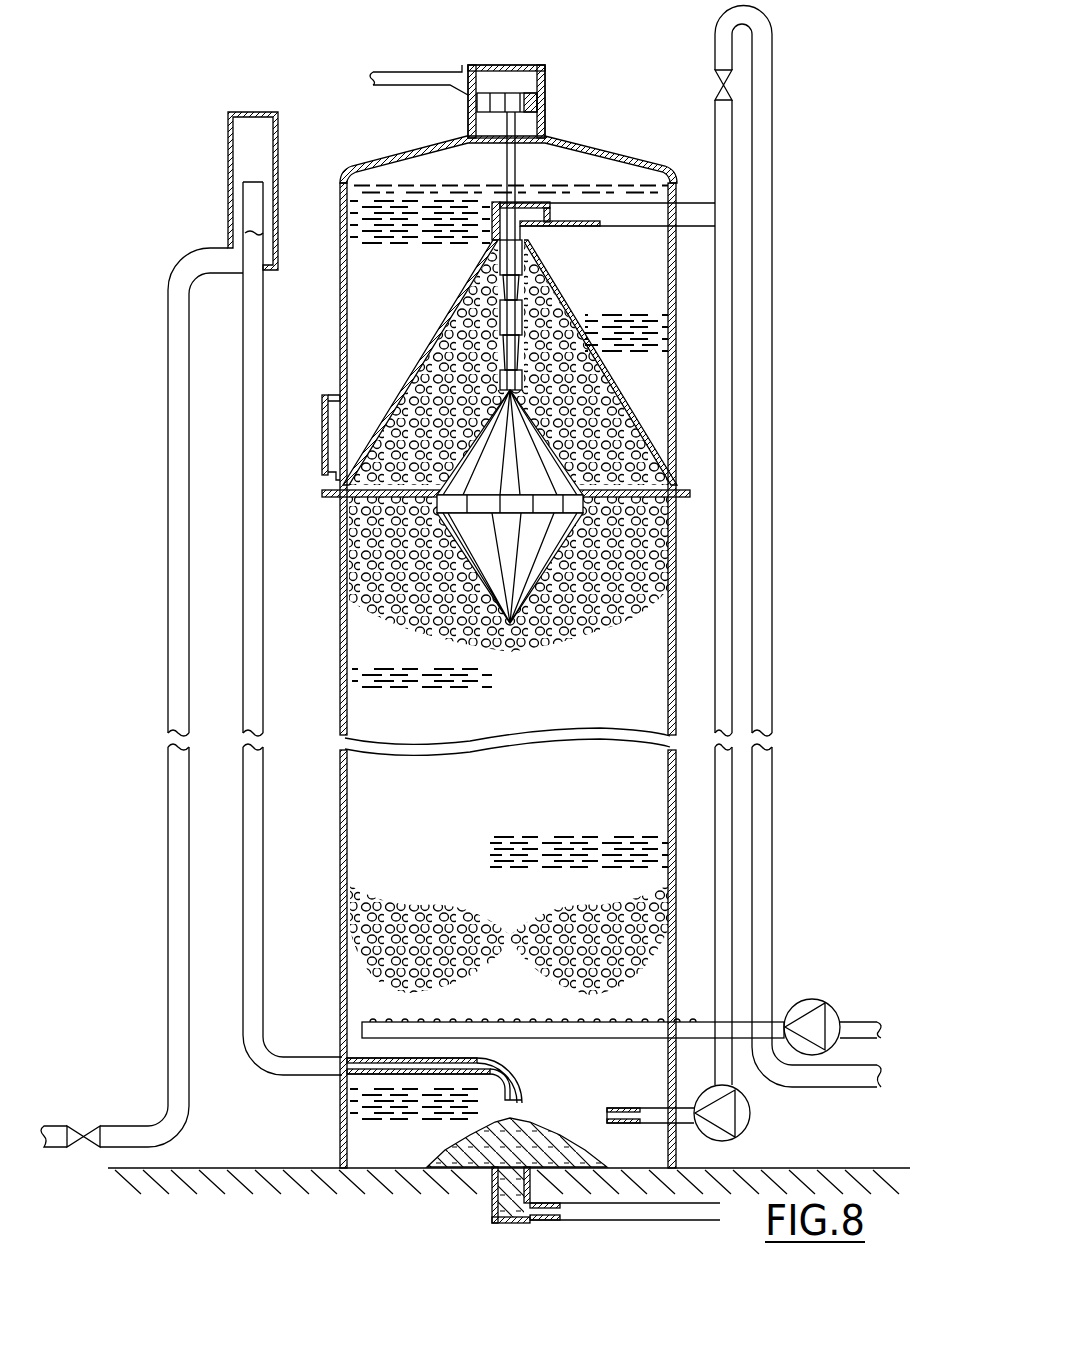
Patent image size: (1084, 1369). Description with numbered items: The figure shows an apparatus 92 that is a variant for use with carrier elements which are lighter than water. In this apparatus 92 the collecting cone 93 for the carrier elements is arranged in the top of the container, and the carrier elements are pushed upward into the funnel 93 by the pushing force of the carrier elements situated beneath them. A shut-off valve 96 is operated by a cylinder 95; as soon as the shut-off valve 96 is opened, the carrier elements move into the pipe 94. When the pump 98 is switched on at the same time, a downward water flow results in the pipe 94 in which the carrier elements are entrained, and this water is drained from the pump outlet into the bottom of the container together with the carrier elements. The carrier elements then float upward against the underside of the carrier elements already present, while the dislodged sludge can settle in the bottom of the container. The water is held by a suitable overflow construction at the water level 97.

The apparatus 92 is at (840, 227).
The collecting cone 93 is at (560, 290).
The pipe 94 is at (612, 222).
The cylinder 95 is at (547, 95).
The shut-off valve 96 is at (510, 245).
The water level 97 is at (403, 183).
The pump 98 is at (750, 1118).